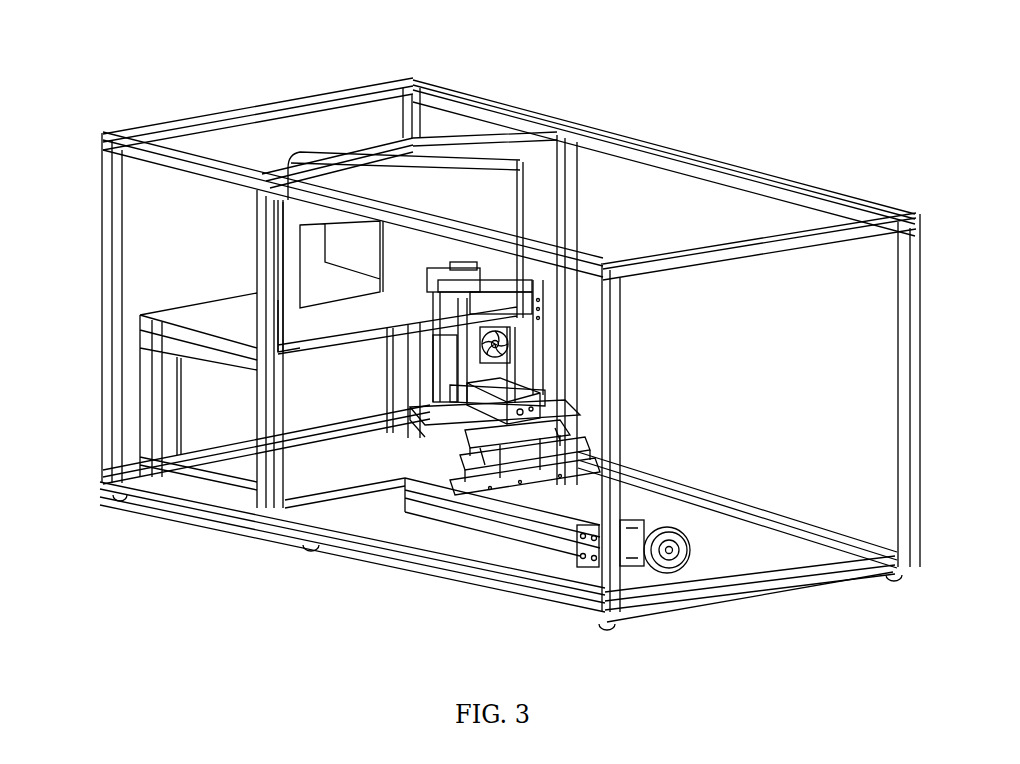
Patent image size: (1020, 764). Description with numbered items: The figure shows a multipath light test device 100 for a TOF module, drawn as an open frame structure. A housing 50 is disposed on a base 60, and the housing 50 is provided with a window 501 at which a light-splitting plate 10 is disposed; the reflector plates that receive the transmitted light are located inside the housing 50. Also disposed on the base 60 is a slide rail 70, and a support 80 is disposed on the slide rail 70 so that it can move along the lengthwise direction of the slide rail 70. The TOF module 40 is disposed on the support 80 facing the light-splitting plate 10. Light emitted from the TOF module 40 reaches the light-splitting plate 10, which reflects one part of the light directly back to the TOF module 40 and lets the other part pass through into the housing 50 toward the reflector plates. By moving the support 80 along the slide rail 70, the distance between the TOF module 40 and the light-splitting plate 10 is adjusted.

The multipath light test device 100 is at (170, 38).
The housing 50 is at (467, 208).
The light-splitting plate 10 is at (337, 258).
The window 501 is at (300, 302).
The TOF module 40 is at (428, 330).
The support 80 is at (458, 470).
The slide rail 70 is at (507, 548).
The base 60 is at (773, 543).